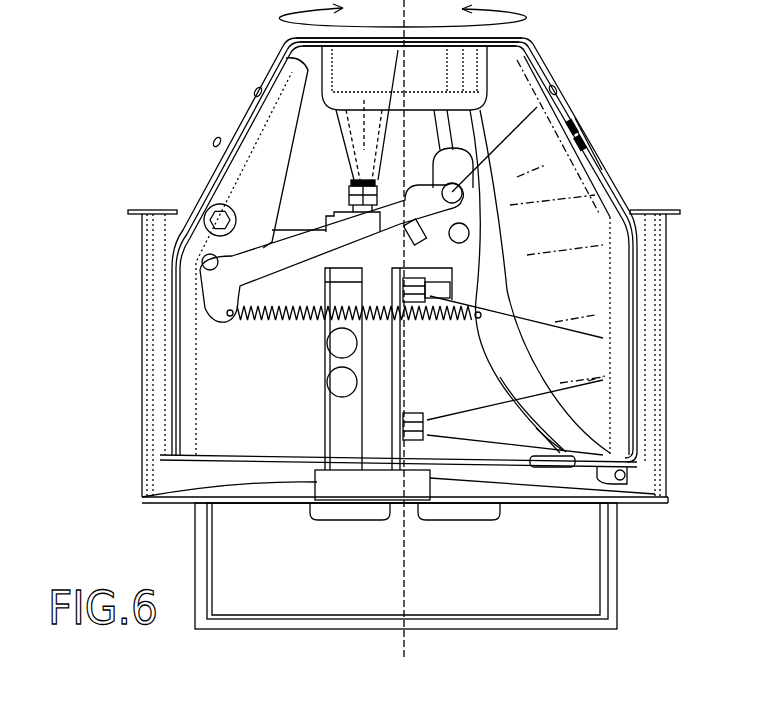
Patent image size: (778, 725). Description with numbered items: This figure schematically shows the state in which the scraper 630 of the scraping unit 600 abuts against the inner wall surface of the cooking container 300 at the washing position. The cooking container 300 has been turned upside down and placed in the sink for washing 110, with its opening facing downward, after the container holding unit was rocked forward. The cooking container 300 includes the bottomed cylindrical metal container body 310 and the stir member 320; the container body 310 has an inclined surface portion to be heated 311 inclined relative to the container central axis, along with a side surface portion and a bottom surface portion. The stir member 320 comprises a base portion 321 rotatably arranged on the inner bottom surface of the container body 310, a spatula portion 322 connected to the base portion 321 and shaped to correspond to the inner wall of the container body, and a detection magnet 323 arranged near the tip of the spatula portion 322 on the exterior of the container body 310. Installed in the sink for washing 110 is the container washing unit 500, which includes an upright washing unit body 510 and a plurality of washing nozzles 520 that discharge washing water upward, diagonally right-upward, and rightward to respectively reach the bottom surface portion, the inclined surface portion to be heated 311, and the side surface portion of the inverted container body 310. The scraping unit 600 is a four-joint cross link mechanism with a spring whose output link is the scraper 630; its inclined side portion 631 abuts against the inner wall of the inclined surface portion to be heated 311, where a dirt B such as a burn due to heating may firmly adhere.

The sink for washing 110 is at (142, 272).
The cooking container 300 is at (627, 190).
The container body 310 is at (540, 51).
The inclined surface portion to be heated 311 is at (256, 90).
The stir member 320 is at (532, 357).
The base portion 321 is at (330, 60).
The spatula portion 322 is at (560, 417).
The detection magnet 323 is at (632, 472).
The container washing unit 500 is at (323, 410).
The washing unit body 510 is at (390, 375).
The washing nozzles 520 is at (350, 188).
The scraping unit 600 is at (203, 293).
The scraper 630 is at (215, 171).
The inclined side portion 631 is at (222, 144).
The dirt B is at (580, 150).